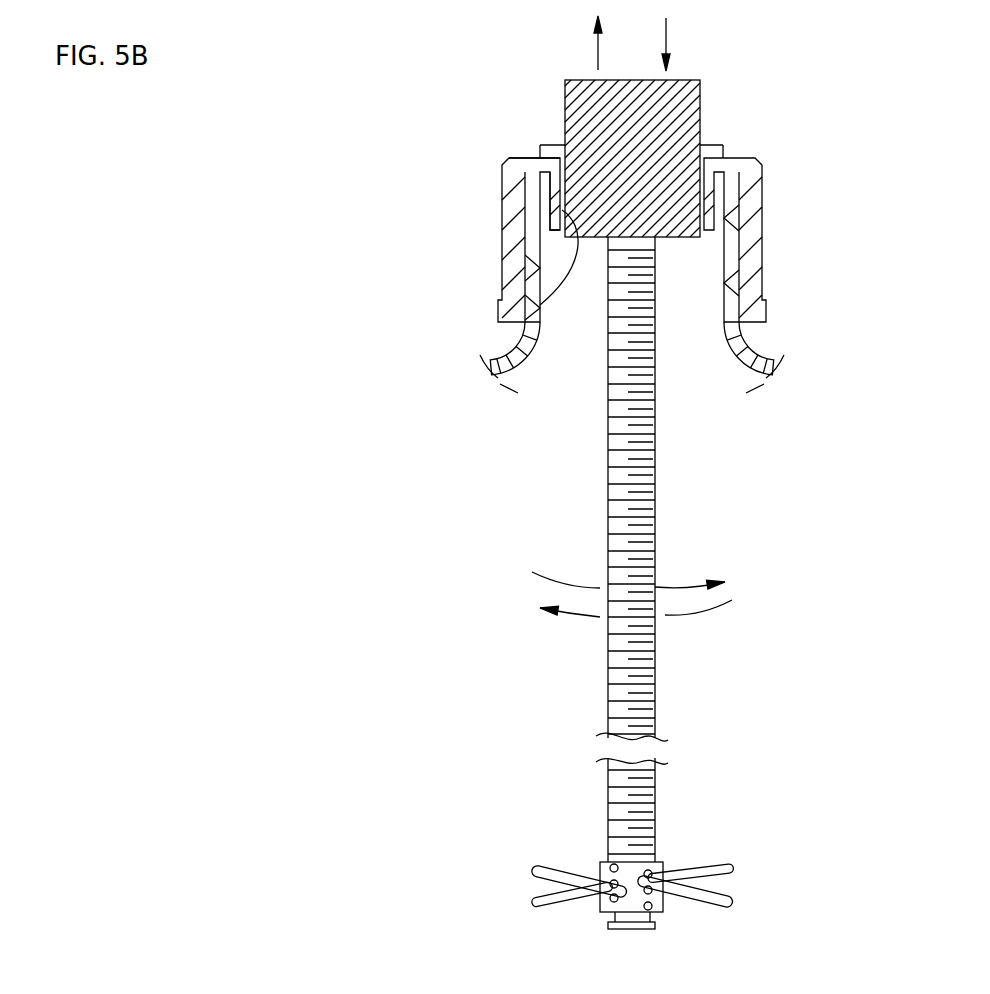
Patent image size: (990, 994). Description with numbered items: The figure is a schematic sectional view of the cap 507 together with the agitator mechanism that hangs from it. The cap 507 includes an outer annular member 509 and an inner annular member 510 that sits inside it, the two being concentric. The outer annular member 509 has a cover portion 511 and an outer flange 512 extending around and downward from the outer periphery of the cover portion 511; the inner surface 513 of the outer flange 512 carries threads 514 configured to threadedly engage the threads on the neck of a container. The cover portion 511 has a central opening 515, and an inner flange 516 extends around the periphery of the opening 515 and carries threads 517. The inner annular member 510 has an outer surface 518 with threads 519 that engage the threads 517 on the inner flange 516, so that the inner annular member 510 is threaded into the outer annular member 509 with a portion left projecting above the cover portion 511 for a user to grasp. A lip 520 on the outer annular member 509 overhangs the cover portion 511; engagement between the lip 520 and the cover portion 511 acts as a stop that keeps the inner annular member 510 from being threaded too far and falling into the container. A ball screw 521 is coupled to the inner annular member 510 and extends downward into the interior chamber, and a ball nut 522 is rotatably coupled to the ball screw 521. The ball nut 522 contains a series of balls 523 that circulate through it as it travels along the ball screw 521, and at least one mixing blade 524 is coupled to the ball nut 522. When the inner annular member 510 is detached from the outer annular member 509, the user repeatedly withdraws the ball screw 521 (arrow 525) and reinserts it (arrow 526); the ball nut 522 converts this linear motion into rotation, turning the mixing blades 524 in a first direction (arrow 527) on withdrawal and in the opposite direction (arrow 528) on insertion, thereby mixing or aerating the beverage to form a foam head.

The cap 507 is at (827, 112).
The outer annular member 509 is at (795, 217).
The inner annular member 510 is at (512, 117).
The cover portion 511 is at (543, 156).
The outer flange 512 is at (505, 245).
The inner surface 513 is at (530, 308).
The threads 514 is at (533, 220).
The opening 515 is at (745, 215).
The inner flange 516 is at (557, 197).
The threads 517 is at (745, 282).
The outer surface 518 is at (537, 270).
The threads 519 is at (537, 307).
The lip 520 is at (702, 150).
The ball screw 521 is at (647, 684).
The ball nut 522 is at (657, 862).
The balls 523 is at (612, 862).
The mixing blade 524 is at (712, 868).
The arrow 525 is at (598, 52).
The arrow 526 is at (668, 34).
The arrow 527 is at (683, 585).
The arrow 528 is at (585, 615).